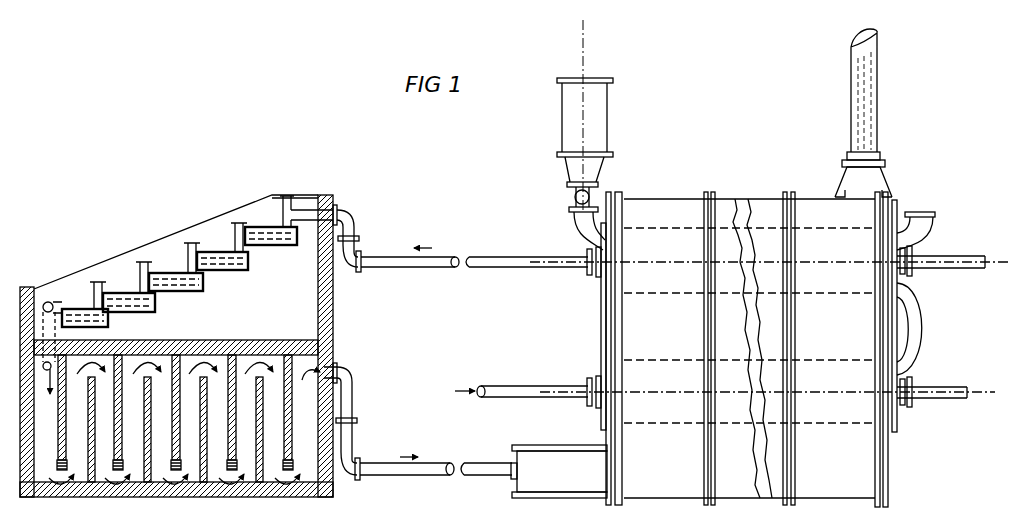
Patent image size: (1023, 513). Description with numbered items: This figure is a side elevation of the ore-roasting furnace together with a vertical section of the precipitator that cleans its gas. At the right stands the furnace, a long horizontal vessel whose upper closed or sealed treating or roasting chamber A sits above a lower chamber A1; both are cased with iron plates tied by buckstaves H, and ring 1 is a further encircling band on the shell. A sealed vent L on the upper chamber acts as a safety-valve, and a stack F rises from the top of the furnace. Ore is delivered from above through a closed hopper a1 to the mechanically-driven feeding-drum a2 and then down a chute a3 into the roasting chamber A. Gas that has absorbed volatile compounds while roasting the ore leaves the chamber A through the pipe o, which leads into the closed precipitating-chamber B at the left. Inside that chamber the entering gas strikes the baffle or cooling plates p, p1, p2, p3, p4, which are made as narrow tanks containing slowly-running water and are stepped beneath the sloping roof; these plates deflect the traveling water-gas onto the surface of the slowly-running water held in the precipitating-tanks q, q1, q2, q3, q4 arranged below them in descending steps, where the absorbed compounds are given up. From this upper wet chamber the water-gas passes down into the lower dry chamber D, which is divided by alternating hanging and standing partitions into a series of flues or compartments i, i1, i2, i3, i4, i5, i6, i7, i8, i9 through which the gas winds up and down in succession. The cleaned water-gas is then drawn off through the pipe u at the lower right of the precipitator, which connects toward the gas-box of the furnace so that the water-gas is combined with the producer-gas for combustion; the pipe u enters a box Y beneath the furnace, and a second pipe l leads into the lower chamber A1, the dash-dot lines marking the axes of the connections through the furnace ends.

The closed precipitating-chamber B is at (176, 346).
The lower dry chamber D is at (176, 357).
The compartment i is at (58, 398).
The compartment i1 is at (88, 422).
The compartment i2 is at (115, 419).
The compartment i3 is at (145, 422).
The compartment i4 is at (172, 419).
The compartment i5 is at (202, 422).
The compartment i6 is at (229, 419).
The compartment i7 is at (256, 422).
The compartment i8 is at (283, 419).
The compartment i9 is at (309, 399).
The baffle or cooling plate p is at (299, 211).
The baffle or cooling plate p1 is at (231, 237).
The baffle or cooling plate p2 is at (183, 256).
The baffle or cooling plate p3 is at (137, 276).
The baffle or cooling plate p4 is at (97, 287).
The precipitating-tank q is at (271, 247).
The precipitating-tank q1 is at (222, 270).
The precipitating-tank q2 is at (176, 289).
The precipitating-tank q3 is at (129, 309).
The precipitating-tank q4 is at (75, 321).
The pipe o is at (467, 241).
The pipe u is at (418, 421).
The pump or receiver Y is at (548, 498).
The supply pipe l is at (505, 390).
The upper closed or sealed treating or roasting chamber A is at (770, 349).
The lower chamber A1 is at (767, 391).
The buckstaves H is at (717, 197).
The intermediate ring 1 is at (793, 197).
The stack F is at (879, 181).
The hopper a1 is at (608, 141).
The mechanically-driven feeding-drum a2 is at (575, 197).
The chute a3 is at (587, 228).
The sealed vent L is at (920, 236).